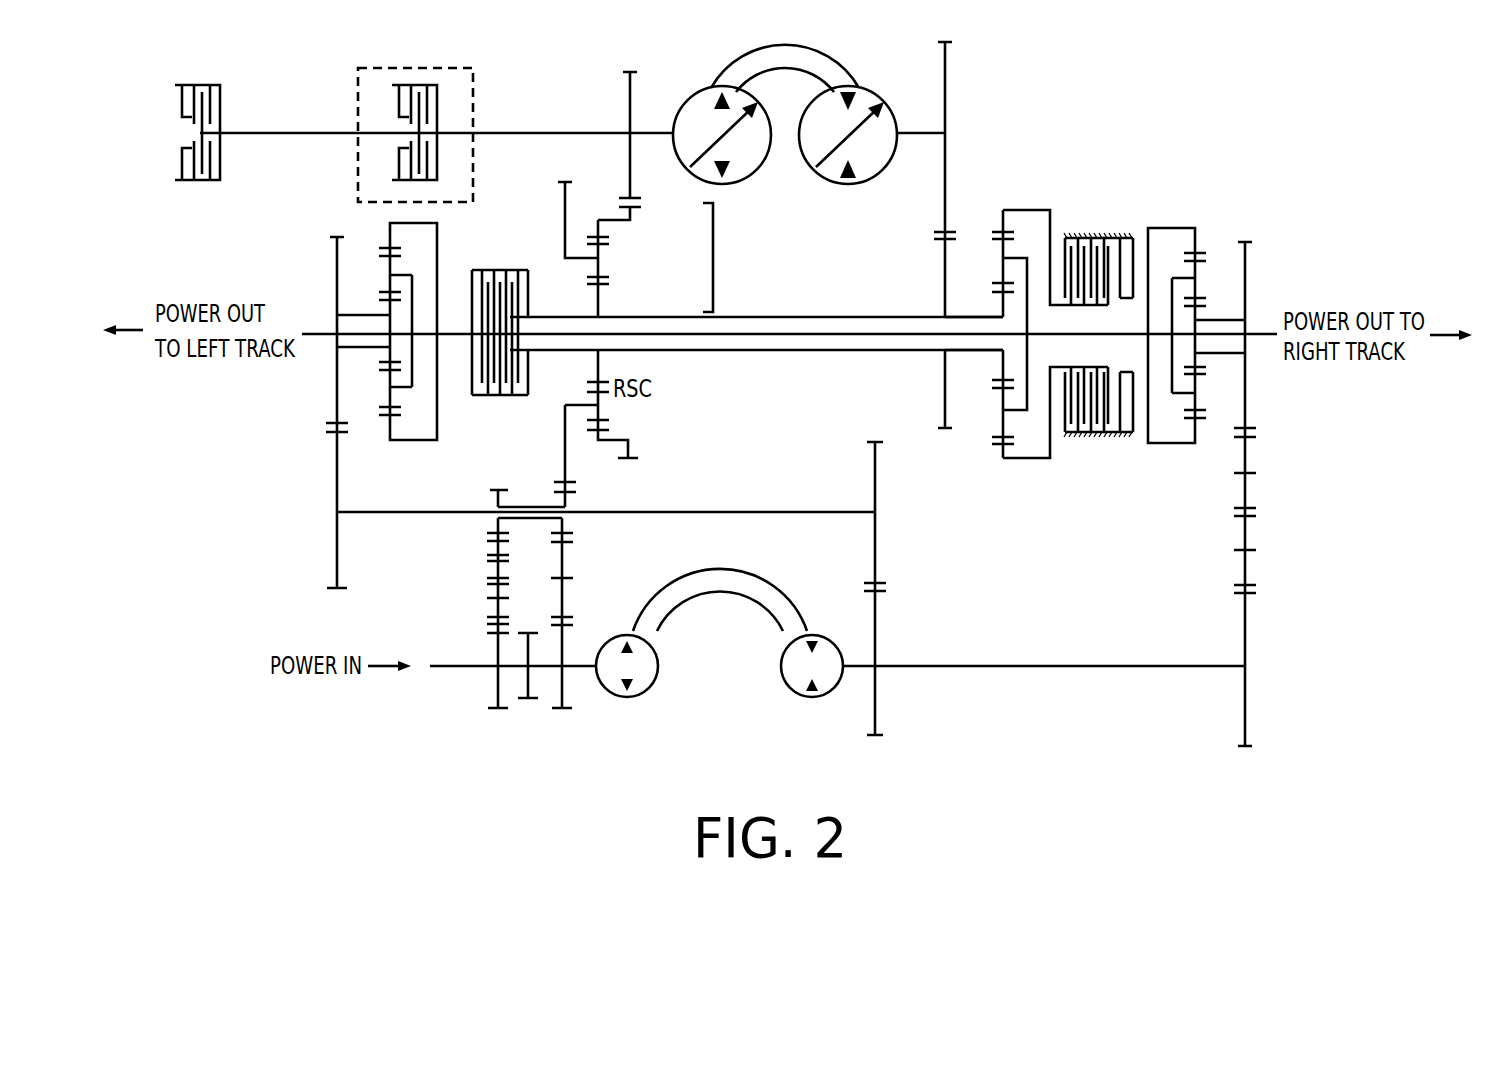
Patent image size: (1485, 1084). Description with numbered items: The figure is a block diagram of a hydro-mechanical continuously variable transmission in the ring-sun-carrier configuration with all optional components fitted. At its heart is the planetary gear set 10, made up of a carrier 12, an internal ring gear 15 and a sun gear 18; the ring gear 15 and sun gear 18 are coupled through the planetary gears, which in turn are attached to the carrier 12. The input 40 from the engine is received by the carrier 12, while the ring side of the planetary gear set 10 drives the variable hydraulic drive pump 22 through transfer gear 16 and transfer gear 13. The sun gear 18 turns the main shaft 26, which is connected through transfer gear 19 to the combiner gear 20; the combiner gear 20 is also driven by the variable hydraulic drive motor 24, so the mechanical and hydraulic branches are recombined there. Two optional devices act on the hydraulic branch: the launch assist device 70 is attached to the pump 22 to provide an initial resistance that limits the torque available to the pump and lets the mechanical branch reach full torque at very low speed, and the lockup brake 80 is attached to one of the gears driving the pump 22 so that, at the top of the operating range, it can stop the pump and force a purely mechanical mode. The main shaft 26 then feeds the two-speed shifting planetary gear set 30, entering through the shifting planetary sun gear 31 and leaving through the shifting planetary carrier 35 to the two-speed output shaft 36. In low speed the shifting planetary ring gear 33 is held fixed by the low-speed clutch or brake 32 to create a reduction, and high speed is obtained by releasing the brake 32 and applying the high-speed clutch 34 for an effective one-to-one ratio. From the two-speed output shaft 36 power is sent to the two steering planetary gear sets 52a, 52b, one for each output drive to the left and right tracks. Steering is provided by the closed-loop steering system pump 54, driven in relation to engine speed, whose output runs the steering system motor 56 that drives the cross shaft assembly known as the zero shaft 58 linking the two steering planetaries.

The planetary gear set 10 is at (716, 253).
The carrier 12 is at (605, 262).
The transfer gear 13 is at (630, 106).
The internal ring gear 15 is at (598, 220).
The transfer gear 16 is at (633, 212).
The sun gear 18 is at (600, 297).
The transfer gear 19 is at (945, 270).
The combiner gear 20 is at (947, 168).
The variable hydraulic drive pump 22 is at (688, 100).
The variable hydraulic drive motor 24 is at (882, 100).
The main shaft 26 is at (770, 317).
The 2-speed shifting planetary gear set 30 is at (1026, 296).
The shifting planetary sun gear 31 is at (1003, 300).
The low-speed clutch or brake 32 is at (1097, 237).
The shifting planetary ring gear 33 is at (1003, 212).
The high-speed clutch 34 is at (483, 270).
The shifting planetary carrier 35 is at (1003, 258).
The 2-speed output shaft 36 is at (722, 334).
The transmission input 40 is at (560, 178).
The steering planetary gear set 52a is at (412, 440).
The steering planetary gear set 52b is at (1172, 228).
The steering system pump 54 is at (615, 697).
The steering system motor 56 is at (832, 697).
The zero shaft 58 is at (675, 512).
The launch assist device 70 is at (188, 183).
The lockup brake 80 is at (473, 78).